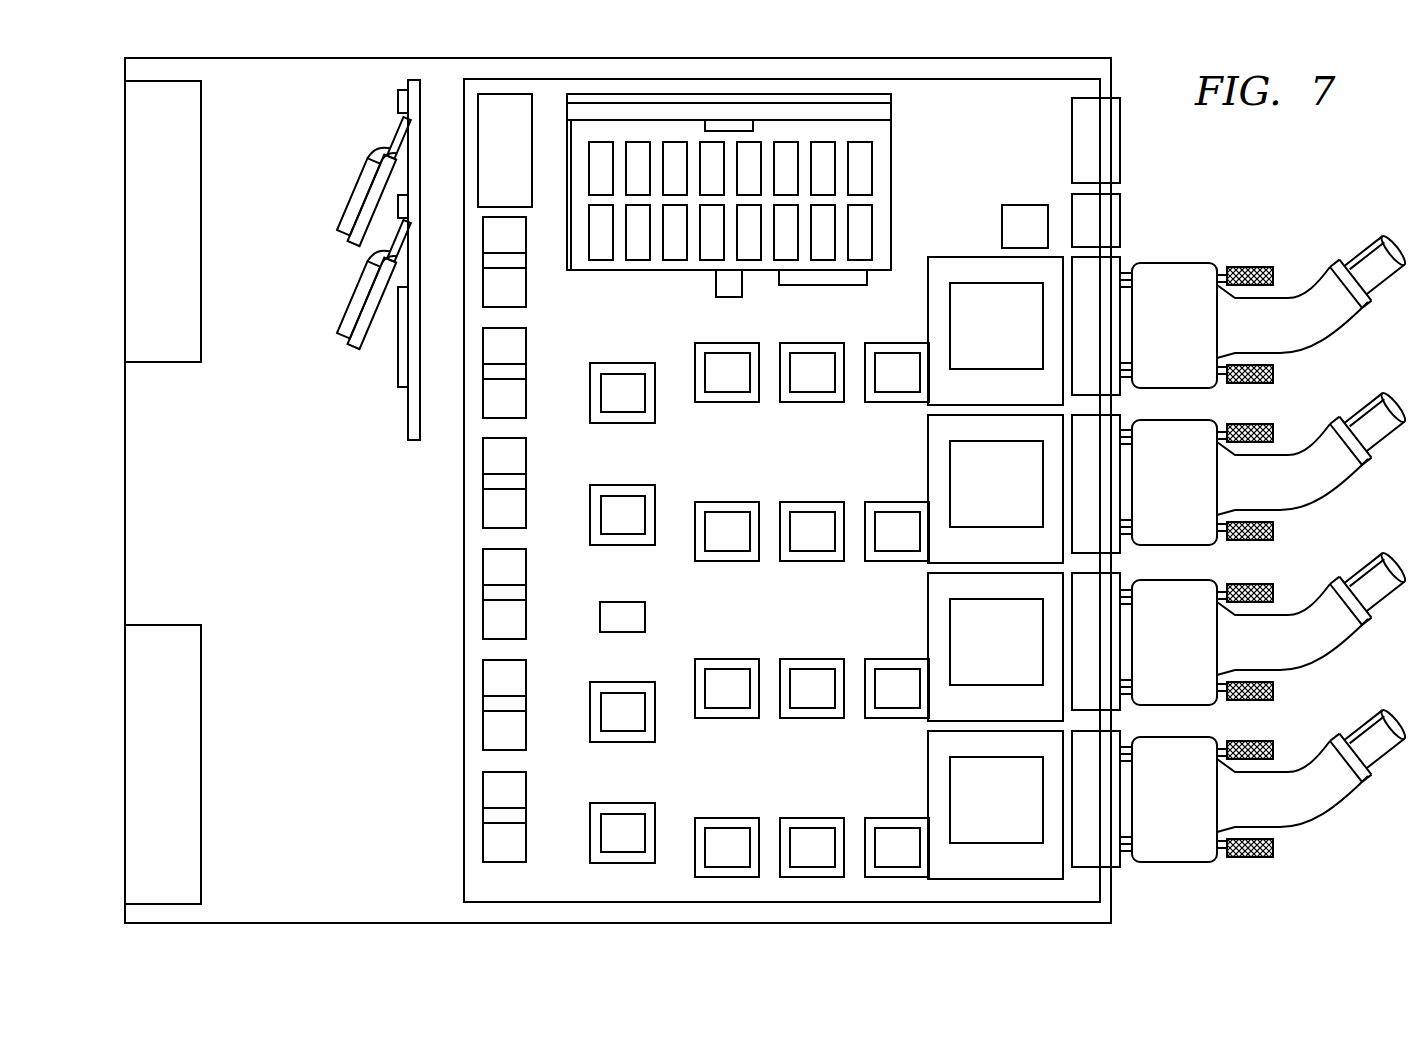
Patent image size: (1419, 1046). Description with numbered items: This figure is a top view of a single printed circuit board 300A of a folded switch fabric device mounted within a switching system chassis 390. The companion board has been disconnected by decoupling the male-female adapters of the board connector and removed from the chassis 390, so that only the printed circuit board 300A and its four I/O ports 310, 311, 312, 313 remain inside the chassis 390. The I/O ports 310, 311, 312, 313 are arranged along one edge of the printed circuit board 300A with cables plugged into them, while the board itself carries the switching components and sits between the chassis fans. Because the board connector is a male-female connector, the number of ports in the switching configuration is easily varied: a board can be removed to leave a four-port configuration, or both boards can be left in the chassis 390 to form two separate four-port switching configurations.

The chassis 390 is at (321, 525).
The printed circuit board 300A is at (464, 664).
The I/O port 310 is at (1115, 321).
The I/O port 311 is at (1115, 478).
The I/O port 312 is at (1115, 647).
The I/O port 313 is at (1115, 803).